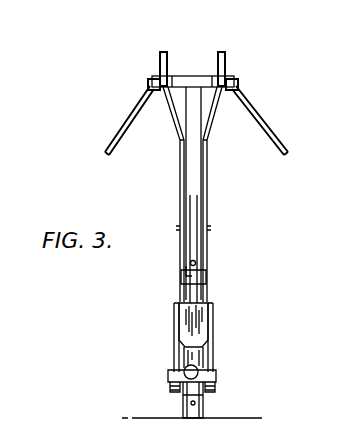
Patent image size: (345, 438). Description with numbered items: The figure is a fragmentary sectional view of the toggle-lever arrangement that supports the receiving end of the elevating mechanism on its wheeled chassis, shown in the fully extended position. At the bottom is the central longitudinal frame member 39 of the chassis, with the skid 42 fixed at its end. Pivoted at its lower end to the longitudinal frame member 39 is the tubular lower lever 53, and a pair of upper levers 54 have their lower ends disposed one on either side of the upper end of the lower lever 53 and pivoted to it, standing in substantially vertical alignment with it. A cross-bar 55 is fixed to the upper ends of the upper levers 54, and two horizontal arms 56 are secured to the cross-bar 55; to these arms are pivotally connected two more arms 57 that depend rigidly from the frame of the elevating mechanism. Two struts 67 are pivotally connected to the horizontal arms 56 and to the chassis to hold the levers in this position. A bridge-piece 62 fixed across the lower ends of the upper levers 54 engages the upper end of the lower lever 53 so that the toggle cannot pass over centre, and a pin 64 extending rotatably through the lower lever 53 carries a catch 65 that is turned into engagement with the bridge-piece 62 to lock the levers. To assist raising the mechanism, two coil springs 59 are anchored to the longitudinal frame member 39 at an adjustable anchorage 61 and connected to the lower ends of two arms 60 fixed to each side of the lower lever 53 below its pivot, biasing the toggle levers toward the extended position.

The central longitudinal frame member 39 is at (222, 370).
The skid 42 is at (204, 409).
The lower lever 53 is at (198, 294).
The upper levers 54 is at (195, 206).
The cross-bar 55 is at (192, 82).
The horizontal arms 56 is at (233, 80).
The arms 57 is at (219, 56).
The coil springs 59 is at (212, 384).
The arms 60 is at (210, 355).
The anchorage 61 is at (180, 368).
The bridge-piece 62 is at (203, 270).
The pin 64 is at (190, 262).
The catch 65 is at (188, 272).
The struts 67 is at (279, 147).